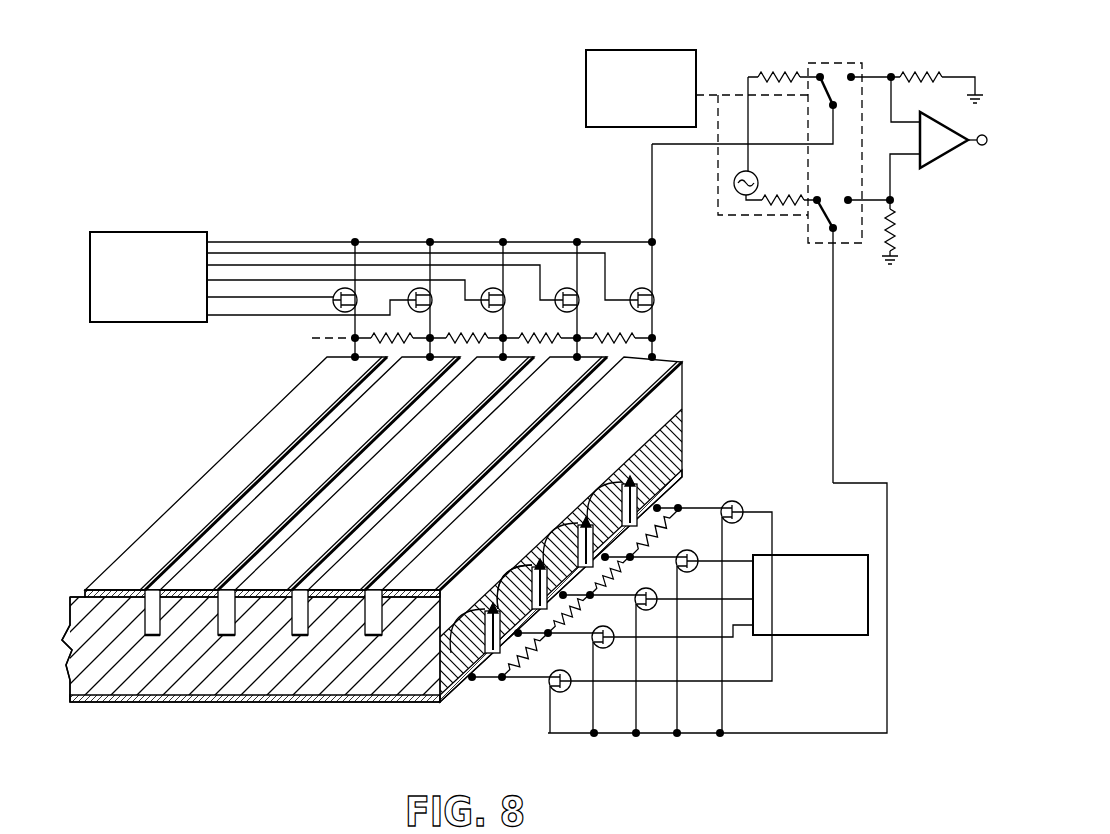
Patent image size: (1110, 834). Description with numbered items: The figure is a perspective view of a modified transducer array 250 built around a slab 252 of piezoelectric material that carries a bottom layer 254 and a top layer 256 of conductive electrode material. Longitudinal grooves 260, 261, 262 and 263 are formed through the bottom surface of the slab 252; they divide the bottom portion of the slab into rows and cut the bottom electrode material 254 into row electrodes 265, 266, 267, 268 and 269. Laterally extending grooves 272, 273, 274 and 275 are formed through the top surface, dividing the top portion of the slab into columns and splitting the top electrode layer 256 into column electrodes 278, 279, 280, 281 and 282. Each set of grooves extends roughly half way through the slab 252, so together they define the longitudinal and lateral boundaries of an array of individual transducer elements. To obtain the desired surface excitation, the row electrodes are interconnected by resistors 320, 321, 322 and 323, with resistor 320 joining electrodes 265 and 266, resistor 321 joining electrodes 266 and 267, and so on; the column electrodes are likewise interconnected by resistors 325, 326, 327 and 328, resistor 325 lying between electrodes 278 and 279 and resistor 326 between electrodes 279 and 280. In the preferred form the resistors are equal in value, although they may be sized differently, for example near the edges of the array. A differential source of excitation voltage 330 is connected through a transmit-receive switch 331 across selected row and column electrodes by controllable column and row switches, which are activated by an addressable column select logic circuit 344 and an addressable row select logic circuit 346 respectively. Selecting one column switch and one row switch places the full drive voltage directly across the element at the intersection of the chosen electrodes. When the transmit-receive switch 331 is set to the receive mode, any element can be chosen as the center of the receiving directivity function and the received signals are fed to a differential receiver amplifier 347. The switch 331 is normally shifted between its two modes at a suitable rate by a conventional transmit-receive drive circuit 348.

The transducer array 250 is at (712, 432).
The slab 252 is at (400, 703).
The bottom layer 254 is at (157, 700).
The top layer 256 is at (80, 590).
The longitudinal groove 260 is at (510, 585).
The longitudinal groove 261 is at (560, 552).
The longitudinal groove 262 is at (620, 495).
The longitudinal groove 263 is at (660, 465).
The row electrode 265 is at (462, 695).
The row electrode 266 is at (475, 680).
The row electrode 267 is at (567, 537).
The row electrode 268 is at (683, 493).
The row electrode 269 is at (677, 483).
The lateral groove 272 is at (142, 637).
The lateral groove 273 is at (222, 637).
The lateral groove 274 is at (297, 637).
The lateral groove 275 is at (372, 637).
The column electrode 278 is at (163, 540).
The column electrode 279 is at (257, 507).
The column electrode 280 is at (360, 500).
The column electrode 281 is at (462, 473).
The column electrode 282 is at (667, 370).
The resistor 320 is at (542, 642).
The resistor 321 is at (586, 601).
The resistor 322 is at (626, 561).
The resistor 323 is at (666, 523).
The resistor 325 is at (400, 344).
The resistor 326 is at (462, 344).
The resistor 327 is at (540, 344).
The resistor 328 is at (618, 344).
The source of excitation voltage 330 is at (744, 207).
The transmit-receive switch 331 is at (845, 63).
The column select logic circuit 344 is at (136, 326).
The row select logic circuit 346 is at (805, 636).
The receiver amplifier 347 is at (957, 150).
The transmit-receive drive circuit 348 is at (657, 50).